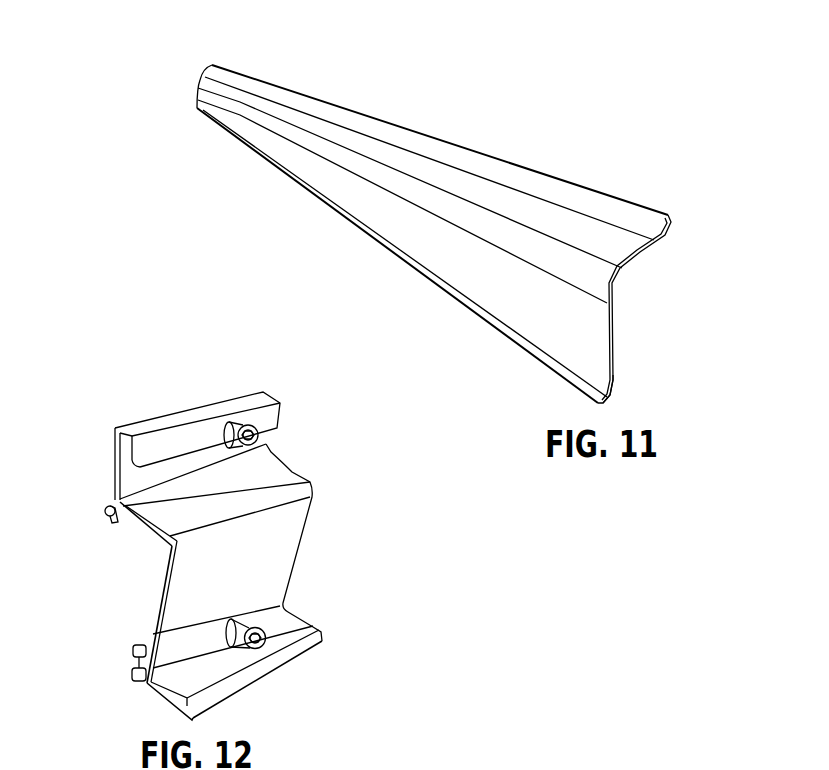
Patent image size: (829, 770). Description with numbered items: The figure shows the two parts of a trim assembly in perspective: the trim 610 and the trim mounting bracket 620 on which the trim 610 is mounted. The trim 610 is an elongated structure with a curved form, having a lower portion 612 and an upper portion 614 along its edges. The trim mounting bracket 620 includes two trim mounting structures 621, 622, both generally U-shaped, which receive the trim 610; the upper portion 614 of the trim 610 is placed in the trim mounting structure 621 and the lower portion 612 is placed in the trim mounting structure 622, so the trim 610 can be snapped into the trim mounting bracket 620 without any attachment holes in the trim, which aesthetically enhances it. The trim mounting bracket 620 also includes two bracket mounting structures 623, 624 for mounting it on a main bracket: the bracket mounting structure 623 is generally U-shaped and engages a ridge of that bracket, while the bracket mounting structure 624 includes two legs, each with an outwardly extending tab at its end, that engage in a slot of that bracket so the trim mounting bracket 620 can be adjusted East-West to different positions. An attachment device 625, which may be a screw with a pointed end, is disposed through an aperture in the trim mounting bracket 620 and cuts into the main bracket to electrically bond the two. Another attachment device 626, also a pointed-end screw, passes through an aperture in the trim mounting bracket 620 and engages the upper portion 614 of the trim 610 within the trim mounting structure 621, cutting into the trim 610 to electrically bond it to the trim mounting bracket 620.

In FIG. 11, the trim 610 is at (388, 122).
In FIG. 11, the lower portion 612 is at (613, 398).
In FIG. 11, the upper portion 614 is at (670, 221).
In FIG. 12, the trim mounting bracket 620 is at (330, 533).
In FIG. 12, the trim mounting structure 621 is at (280, 406).
In FIG. 12, the trim mounting structure 622 is at (321, 630).
In FIG. 12, the bracket mounting structure 623 is at (113, 525).
In FIG. 12, the bracket mounting structure 624 is at (133, 657).
In FIG. 12, the attachment device 625 is at (276, 608).
In FIG. 12, the attachment device 626 is at (228, 422).